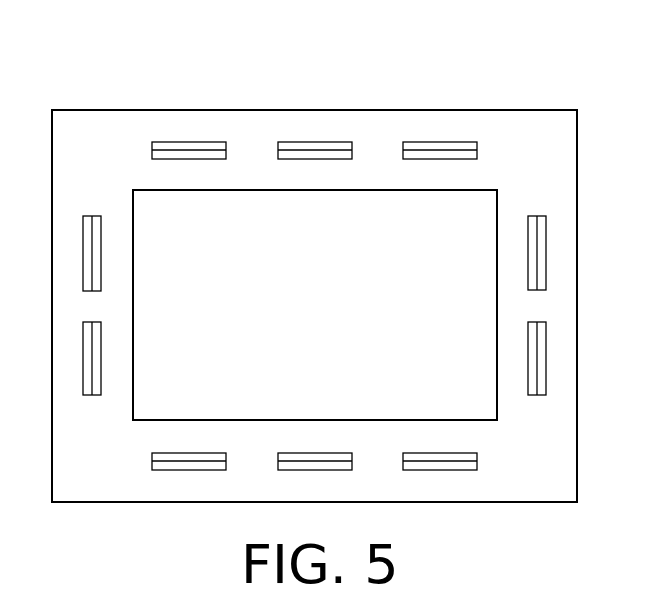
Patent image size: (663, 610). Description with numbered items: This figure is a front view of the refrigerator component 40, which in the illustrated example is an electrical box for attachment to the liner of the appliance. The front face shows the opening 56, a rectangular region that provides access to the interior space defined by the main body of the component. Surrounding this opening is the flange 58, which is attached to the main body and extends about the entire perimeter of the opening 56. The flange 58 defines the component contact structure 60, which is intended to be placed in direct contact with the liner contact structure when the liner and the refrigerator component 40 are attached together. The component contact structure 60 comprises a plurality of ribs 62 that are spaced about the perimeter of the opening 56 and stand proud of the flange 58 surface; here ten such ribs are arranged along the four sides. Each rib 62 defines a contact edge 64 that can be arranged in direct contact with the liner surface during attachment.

The refrigerator component 40 is at (577, 148).
The opening 56 is at (362, 223).
The flange 58 is at (577, 430).
The component contact structure 60 is at (147, 136).
The ribs 62 is at (202, 142).
The contact edge 64 is at (183, 159).